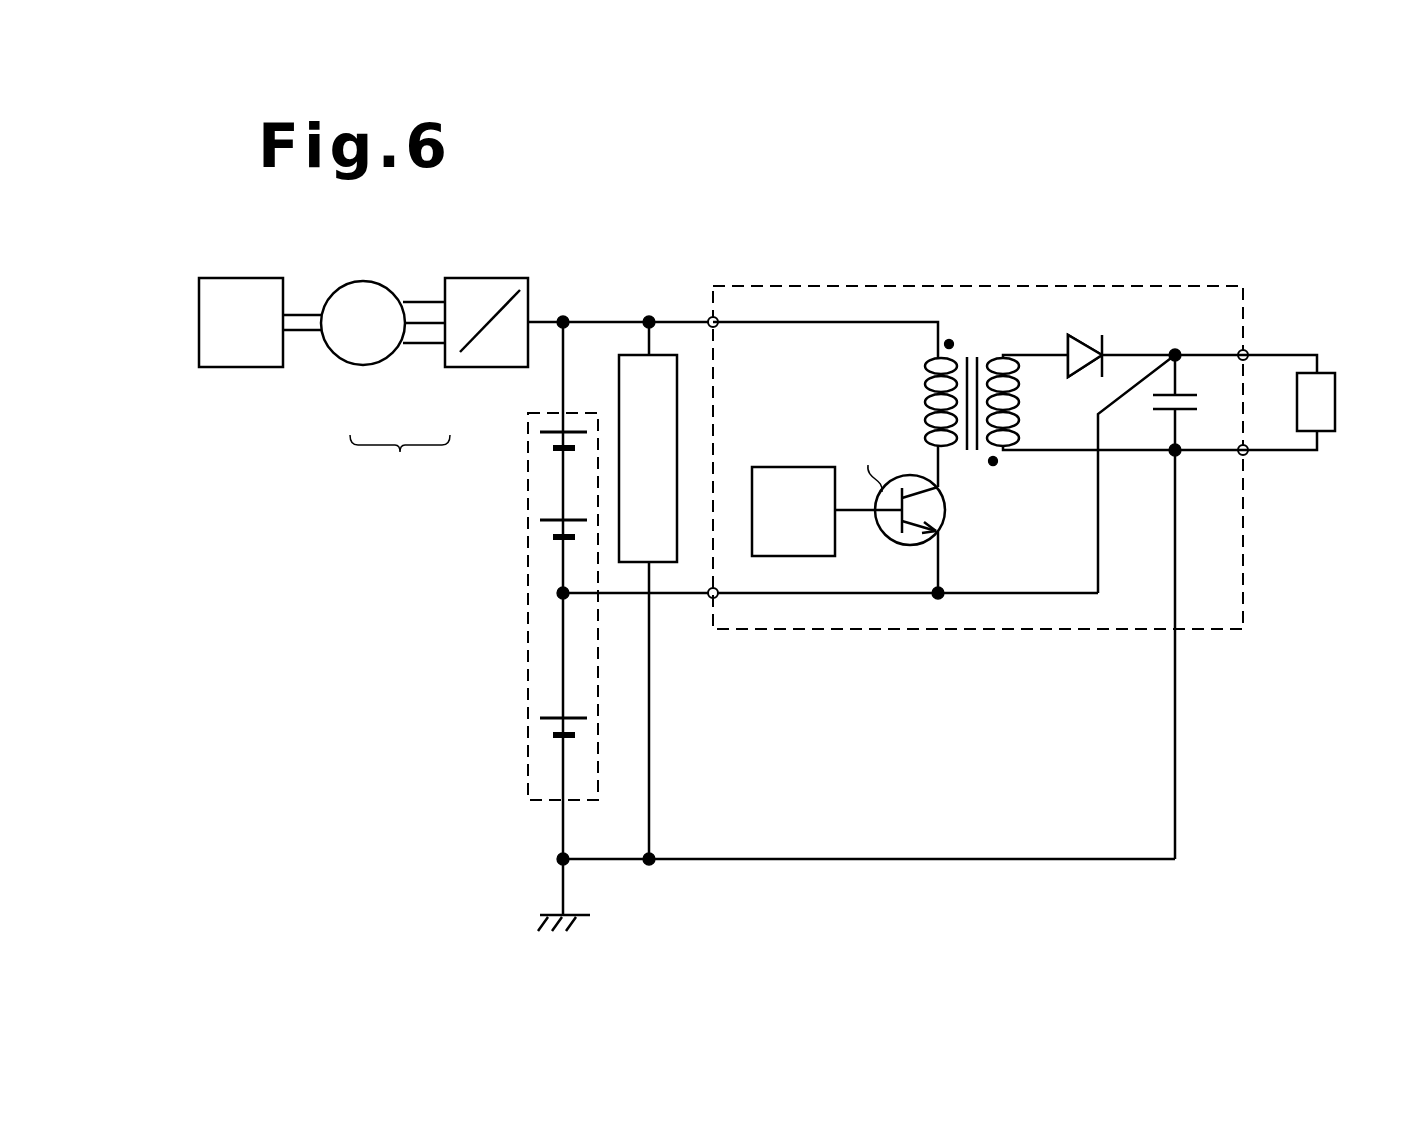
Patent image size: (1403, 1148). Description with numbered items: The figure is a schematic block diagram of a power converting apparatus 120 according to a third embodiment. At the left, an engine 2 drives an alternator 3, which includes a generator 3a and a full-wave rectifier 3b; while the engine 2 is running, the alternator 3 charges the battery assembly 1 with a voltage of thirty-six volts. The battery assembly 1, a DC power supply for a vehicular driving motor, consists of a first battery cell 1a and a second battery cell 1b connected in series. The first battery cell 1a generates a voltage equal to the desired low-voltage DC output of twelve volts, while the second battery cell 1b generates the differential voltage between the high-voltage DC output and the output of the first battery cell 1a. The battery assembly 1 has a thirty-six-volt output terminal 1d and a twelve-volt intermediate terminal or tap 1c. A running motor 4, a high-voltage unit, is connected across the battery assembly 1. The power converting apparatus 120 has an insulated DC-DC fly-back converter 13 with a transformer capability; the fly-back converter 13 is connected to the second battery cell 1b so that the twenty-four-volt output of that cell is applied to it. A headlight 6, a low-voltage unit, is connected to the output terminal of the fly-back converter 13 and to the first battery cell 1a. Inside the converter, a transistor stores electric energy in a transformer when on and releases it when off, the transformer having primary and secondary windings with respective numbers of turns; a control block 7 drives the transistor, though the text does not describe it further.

The power converting apparatus 120 is at (1287, 213).
The battery assembly 1 is at (528, 664).
The first battery cell 1a is at (562, 762).
The second battery cell 1b is at (562, 492).
The intermediate terminal or tap 1c is at (557, 593).
The output terminal 1d is at (562, 316).
The engine 2 is at (255, 368).
The alternator 3 is at (400, 462).
The generator 3a is at (362, 365).
The full-wave rectifier 3b is at (460, 368).
The running motor 4 is at (618, 377).
The headlight 6 is at (1335, 418).
The control circuit 7 is at (774, 467).
The insulated DC-DC converter (fly-back converter) 13 is at (1245, 307).